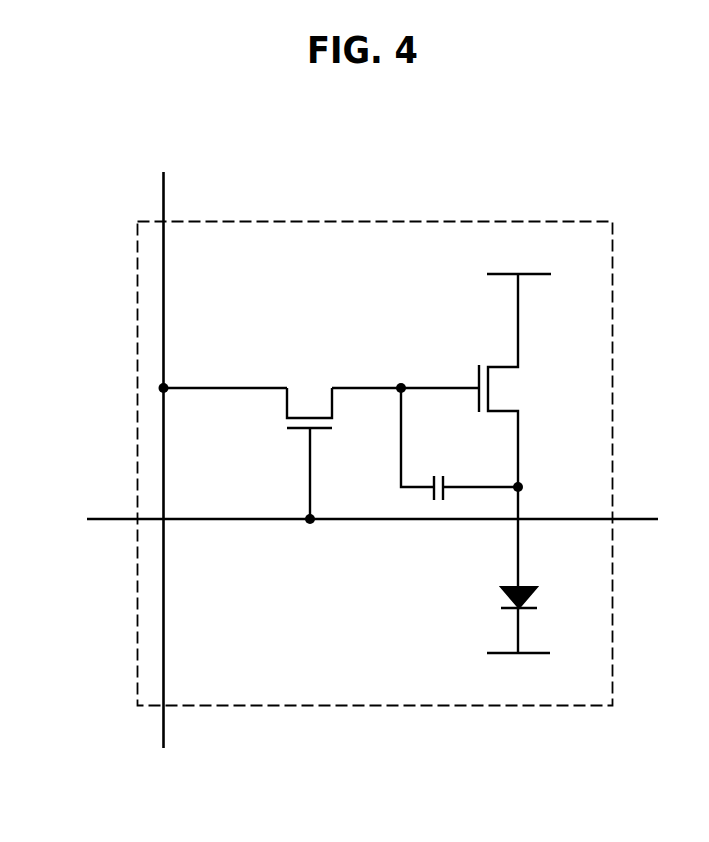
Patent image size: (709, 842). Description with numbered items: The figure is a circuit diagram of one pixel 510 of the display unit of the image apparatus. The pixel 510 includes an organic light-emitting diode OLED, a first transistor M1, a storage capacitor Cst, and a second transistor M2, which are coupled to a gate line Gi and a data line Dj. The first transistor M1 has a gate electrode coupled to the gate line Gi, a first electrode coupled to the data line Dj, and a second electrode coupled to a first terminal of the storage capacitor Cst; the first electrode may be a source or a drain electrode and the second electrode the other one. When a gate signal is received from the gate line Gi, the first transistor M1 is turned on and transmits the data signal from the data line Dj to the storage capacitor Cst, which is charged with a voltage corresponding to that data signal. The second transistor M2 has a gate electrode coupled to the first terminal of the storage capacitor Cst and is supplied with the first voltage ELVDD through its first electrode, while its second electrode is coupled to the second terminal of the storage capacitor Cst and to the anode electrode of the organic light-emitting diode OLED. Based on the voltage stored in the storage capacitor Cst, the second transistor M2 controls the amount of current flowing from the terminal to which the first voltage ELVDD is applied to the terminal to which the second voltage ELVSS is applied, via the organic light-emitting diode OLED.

The pixel 510 is at (485, 221).
The data line Dj is at (167, 441).
The gate line Gi is at (358, 520).
The first transistor M1 is at (309, 445).
The second transistor M2 is at (512, 430).
The storage capacitor Cst is at (459, 444).
The organic light-emitting diode OLED is at (549, 620).
The first voltage ELVDD is at (518, 258).
The second voltage ELVSS is at (517, 670).